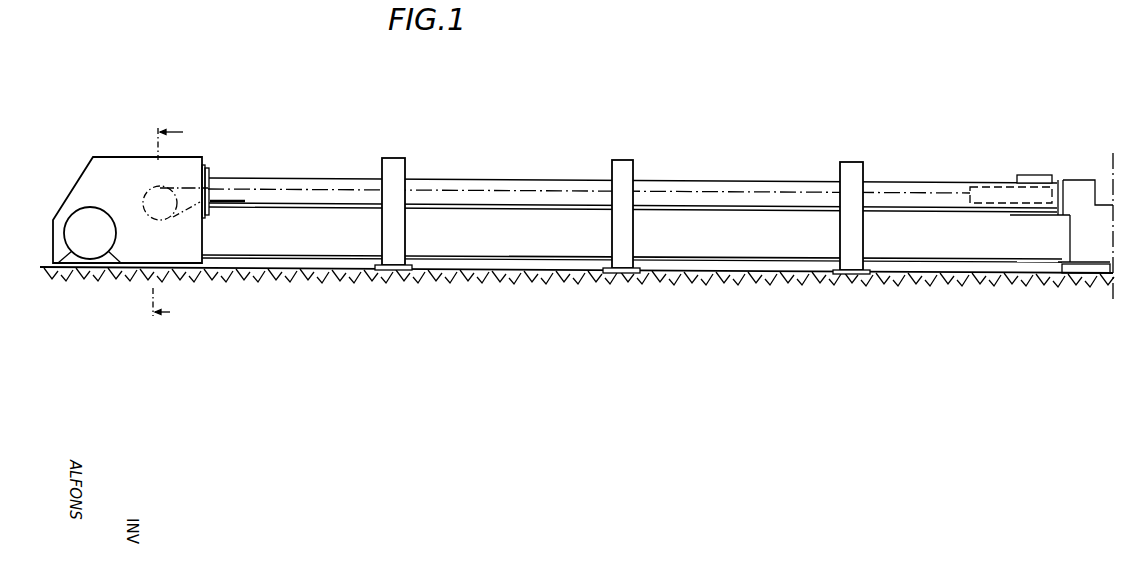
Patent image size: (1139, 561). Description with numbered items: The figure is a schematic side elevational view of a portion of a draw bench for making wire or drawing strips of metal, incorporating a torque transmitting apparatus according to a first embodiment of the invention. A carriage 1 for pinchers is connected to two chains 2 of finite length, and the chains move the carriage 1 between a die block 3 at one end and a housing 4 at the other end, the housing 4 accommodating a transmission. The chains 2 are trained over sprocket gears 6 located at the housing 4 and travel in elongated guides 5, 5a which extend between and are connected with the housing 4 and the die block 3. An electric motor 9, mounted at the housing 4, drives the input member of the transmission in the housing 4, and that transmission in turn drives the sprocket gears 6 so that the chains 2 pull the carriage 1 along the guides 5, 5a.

The carriage 1 is at (1033, 176).
The chains 2 is at (573, 192).
The die block 3 is at (1087, 247).
The housing 4 is at (133, 173).
The elongated guide 5 is at (320, 180).
The elongated guide 5a is at (258, 201).
The sprocket gears 6 is at (165, 213).
The electric motor 9 is at (92, 245).